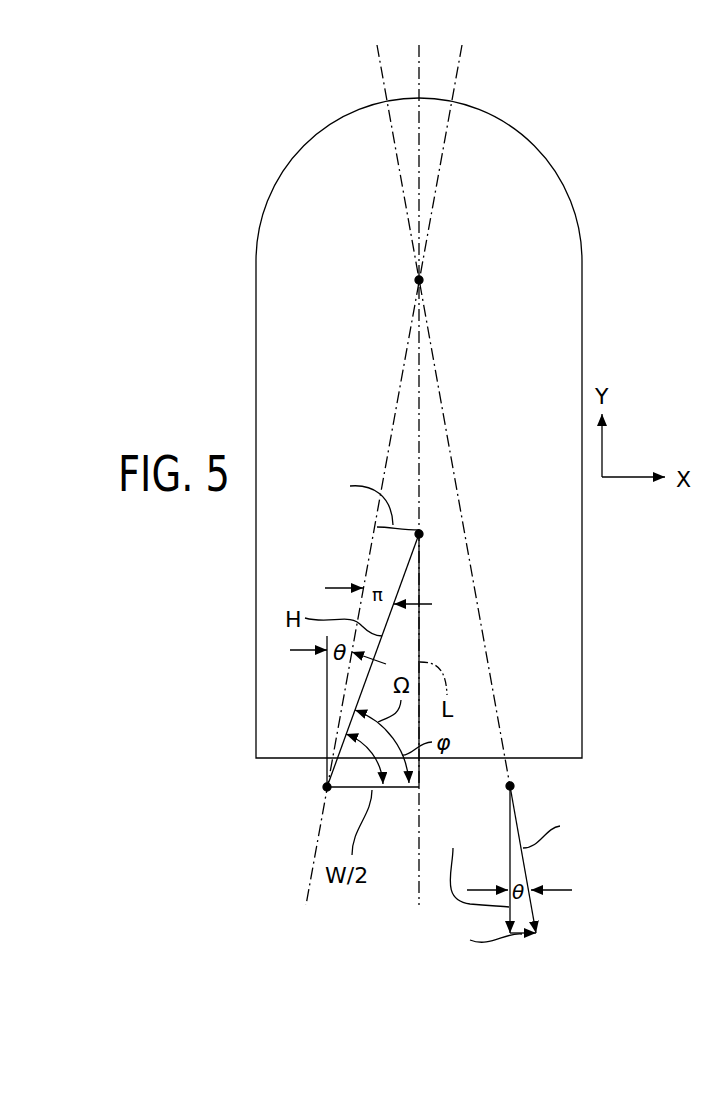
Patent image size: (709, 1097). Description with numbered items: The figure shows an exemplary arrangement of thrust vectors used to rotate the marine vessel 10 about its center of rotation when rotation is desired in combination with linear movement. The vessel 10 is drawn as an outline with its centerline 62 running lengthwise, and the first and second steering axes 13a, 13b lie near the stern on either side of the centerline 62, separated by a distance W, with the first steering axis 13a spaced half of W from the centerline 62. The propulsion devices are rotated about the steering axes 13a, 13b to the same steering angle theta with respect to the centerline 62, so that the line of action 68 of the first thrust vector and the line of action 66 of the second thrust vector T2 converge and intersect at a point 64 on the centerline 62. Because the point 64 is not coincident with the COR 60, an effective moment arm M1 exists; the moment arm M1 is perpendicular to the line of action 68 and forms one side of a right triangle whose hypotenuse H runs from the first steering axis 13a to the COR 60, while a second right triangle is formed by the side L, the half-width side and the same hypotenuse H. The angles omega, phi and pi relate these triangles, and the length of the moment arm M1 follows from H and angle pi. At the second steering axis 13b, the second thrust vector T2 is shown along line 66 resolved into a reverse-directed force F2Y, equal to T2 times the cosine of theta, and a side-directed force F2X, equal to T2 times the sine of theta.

The vessel 10 is at (565, 204).
The first steering axis 13a is at (327, 787).
The second steering axis 13b is at (512, 786).
The center of rotation (COR) 60 is at (421, 534).
The centerline 62 is at (412, 204).
The intersection point 64 is at (417, 280).
The line of action of thrust vector T2 66 is at (396, 163).
The line of action of thrust vector T1 68 is at (442, 158).
The moment arm M1 is at (367, 502).
The second thrust vector T2 is at (557, 833).
The reverse-directed force F2Y is at (472, 862).
The side-directed force F2X is at (477, 938).